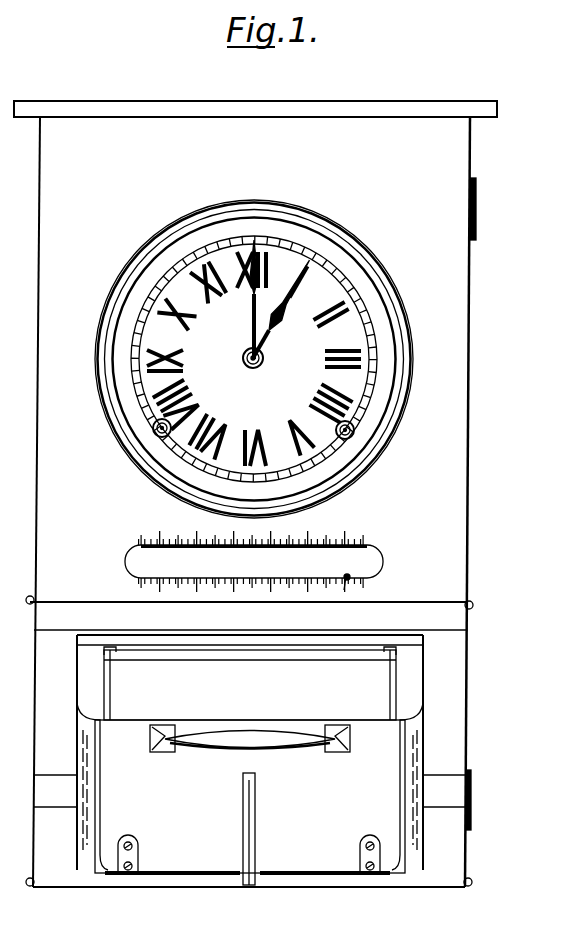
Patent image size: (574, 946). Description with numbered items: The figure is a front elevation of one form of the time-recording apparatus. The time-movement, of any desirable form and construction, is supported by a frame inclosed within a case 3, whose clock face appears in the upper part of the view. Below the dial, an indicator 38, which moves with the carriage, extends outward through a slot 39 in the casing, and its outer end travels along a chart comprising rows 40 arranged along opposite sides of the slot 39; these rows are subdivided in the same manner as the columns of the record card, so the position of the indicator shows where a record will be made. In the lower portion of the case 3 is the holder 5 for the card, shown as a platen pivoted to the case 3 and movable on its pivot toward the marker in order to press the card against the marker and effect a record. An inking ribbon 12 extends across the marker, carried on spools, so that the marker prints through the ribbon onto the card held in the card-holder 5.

The case 3 is at (457, 398).
The card-holder 5 is at (206, 797).
The inking ribbon 12 is at (263, 681).
The indicator 38 is at (347, 575).
The slot 39 is at (277, 548).
The rows 40 is at (270, 562).